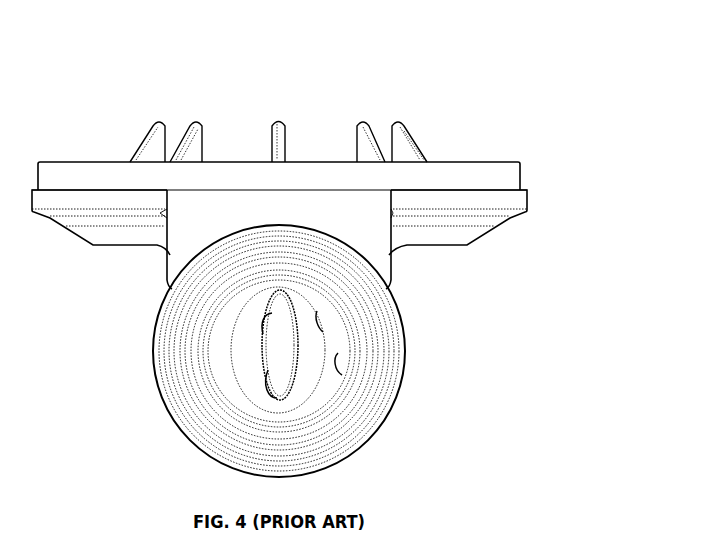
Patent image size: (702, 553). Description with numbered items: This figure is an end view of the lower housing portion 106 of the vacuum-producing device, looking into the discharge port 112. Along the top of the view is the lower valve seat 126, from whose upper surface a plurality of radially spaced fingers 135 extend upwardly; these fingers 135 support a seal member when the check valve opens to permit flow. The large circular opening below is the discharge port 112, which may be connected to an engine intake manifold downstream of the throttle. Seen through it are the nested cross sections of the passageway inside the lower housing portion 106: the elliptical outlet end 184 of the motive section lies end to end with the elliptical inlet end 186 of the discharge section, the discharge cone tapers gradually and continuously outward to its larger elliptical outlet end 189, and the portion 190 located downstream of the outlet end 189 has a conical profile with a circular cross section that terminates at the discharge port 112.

The lower housing portion 106 is at (314, 96).
The discharge port 112 is at (355, 437).
The lower valve seat 126 is at (513, 178).
The radially spaced fingers 135 is at (408, 130).
The outlet end of the motive section 184 is at (277, 398).
The inlet end of the discharge section 186 is at (272, 313).
The outlet end of the second tapering portion 189 is at (317, 311).
The portion of the discharge section downstream of the outlet end 190 is at (342, 375).